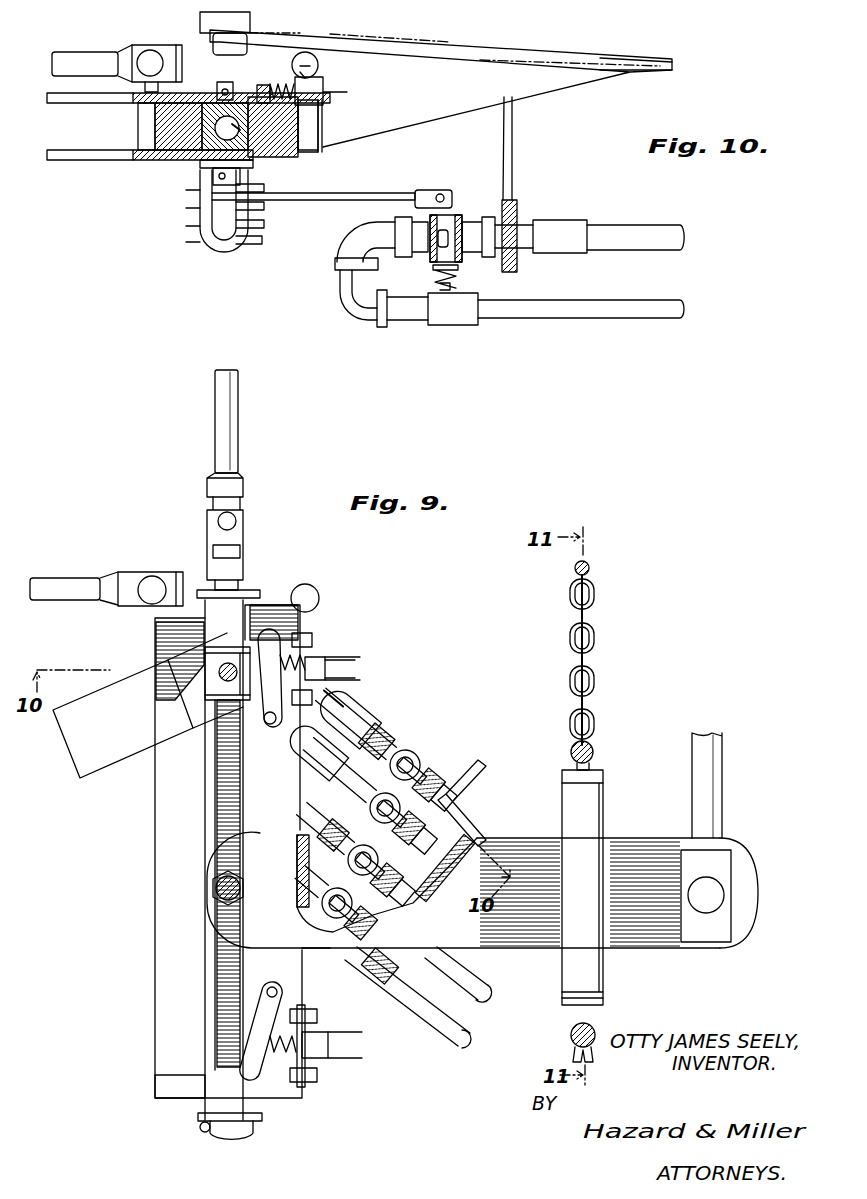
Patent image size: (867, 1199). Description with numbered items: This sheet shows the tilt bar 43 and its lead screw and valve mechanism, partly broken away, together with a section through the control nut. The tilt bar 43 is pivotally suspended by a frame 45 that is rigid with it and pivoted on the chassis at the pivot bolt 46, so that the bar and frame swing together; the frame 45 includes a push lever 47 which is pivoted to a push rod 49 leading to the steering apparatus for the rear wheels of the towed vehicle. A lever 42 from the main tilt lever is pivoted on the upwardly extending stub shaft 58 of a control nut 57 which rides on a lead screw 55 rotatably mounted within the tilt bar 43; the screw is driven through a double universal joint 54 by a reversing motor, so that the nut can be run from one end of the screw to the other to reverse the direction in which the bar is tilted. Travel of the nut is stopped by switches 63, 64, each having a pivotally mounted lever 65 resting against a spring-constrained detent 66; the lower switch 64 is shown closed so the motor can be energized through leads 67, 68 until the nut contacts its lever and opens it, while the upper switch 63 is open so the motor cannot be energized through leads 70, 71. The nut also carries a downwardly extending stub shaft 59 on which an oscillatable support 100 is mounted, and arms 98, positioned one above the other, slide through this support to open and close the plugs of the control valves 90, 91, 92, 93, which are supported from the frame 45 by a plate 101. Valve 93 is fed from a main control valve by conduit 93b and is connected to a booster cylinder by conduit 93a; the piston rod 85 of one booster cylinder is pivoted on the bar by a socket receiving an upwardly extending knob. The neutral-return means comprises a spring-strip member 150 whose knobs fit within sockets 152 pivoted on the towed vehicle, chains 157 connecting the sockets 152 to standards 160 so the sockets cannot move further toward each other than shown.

In FIG. 10, the piston rod 85 is at (92, 55).
In FIG. 9, the piston rod 85 is at (63, 583).
In FIG. 10, the pivot bolt 46 is at (210, 43).
In FIG. 9, the pivot bolt 46 is at (208, 893).
In FIG. 10, the frame 45 is at (426, 41).
In FIG. 9, the frame 45 is at (520, 827).
In FIG. 10, the push lever 47 is at (668, 60).
In FIG. 9, the push lever 47 is at (672, 955).
In FIG. 10, the lever 42 is at (70, 98).
In FIG. 9, the lever 42 is at (112, 770).
In FIG. 10, the tilt bar 43 is at (160, 120).
In FIG. 9, the tilt bar 43 is at (180, 990).
In FIG. 10, the stub shaft 58 is at (218, 88).
In FIG. 9, the stub shaft 58 is at (220, 668).
In FIG. 10, the lever 65 is at (268, 80).
In FIG. 9, the lever 65 is at (263, 640).
In FIG. 10, the spring-constrained detent 66 is at (282, 80).
In FIG. 9, the spring-constrained detent 66 is at (312, 652).
In FIG. 10, the switch 63 is at (322, 82).
In FIG. 9, the switch 63 is at (326, 670).
In FIG. 10, the control nut 57 is at (205, 163).
In FIG. 9, the control nut 57 is at (220, 687).
In FIG. 10, the lead screw 55 is at (268, 150).
In FIG. 9, the lead screw 55 is at (215, 832).
In FIG. 10, the stub shaft 59 is at (216, 180).
In FIG. 10, the arms 98 is at (300, 197).
In FIG. 9, the arms 98 is at (368, 730).
In FIG. 10, the oscillatable support 100 is at (230, 250).
In FIG. 10, the valve 93 is at (462, 212).
In FIG. 9, the valve 93 is at (422, 762).
In FIG. 10, the plate 101 is at (510, 215).
In FIG. 9, the plate 101 is at (472, 812).
In FIG. 10, the conduit 93b is at (652, 230).
In FIG. 10, the conduit 93a is at (665, 305).
In FIG. 9, the double universal joint 54 is at (244, 410).
In FIG. 9, the lead 71 is at (340, 658).
In FIG. 9, the lead 70 is at (350, 690).
In FIG. 9, the valve 91 is at (402, 818).
In FIG. 9, the valve 92 is at (380, 865).
In FIG. 9, the valve 90 is at (342, 918).
In FIG. 9, the push rod 49 is at (722, 787).
In FIG. 9, the standard 160 is at (590, 568).
In FIG. 9, the chain 157 is at (596, 648).
In FIG. 9, the spring-strip member 150 is at (562, 790).
In FIG. 9, the socket 152 is at (596, 756).
In FIG. 9, the lead 68 is at (350, 1032).
In FIG. 9, the lead 67 is at (335, 1058).
In FIG. 9, the switch 64 is at (322, 1056).